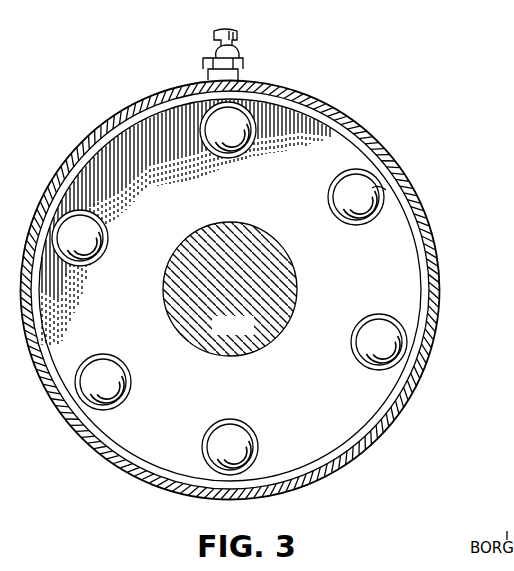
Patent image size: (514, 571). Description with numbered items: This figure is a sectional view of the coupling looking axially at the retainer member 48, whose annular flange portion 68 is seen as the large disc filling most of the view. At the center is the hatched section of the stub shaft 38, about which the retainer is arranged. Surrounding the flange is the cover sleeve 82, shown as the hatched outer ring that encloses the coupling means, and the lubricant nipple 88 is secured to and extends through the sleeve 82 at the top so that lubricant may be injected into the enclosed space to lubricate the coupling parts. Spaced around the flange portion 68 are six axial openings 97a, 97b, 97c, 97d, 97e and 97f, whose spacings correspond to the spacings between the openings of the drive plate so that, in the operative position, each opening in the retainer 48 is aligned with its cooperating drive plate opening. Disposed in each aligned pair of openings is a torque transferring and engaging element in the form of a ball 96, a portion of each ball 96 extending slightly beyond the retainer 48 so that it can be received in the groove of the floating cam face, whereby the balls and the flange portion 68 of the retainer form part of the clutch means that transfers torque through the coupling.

The stub shaft 38 is at (230, 289).
The retainer member 48 is at (428, 289).
The annular flange portion 68 is at (230, 290).
The cover sleeve 82 is at (307, 100).
The lubricant nipple 88 is at (216, 36).
The ball 96 is at (372, 188).
The opening 97a is at (252, 138).
The opening 97b is at (334, 188).
The opening 97c is at (360, 321).
The opening 97d is at (250, 428).
The opening 97e is at (123, 388).
The opening 97f is at (98, 218).